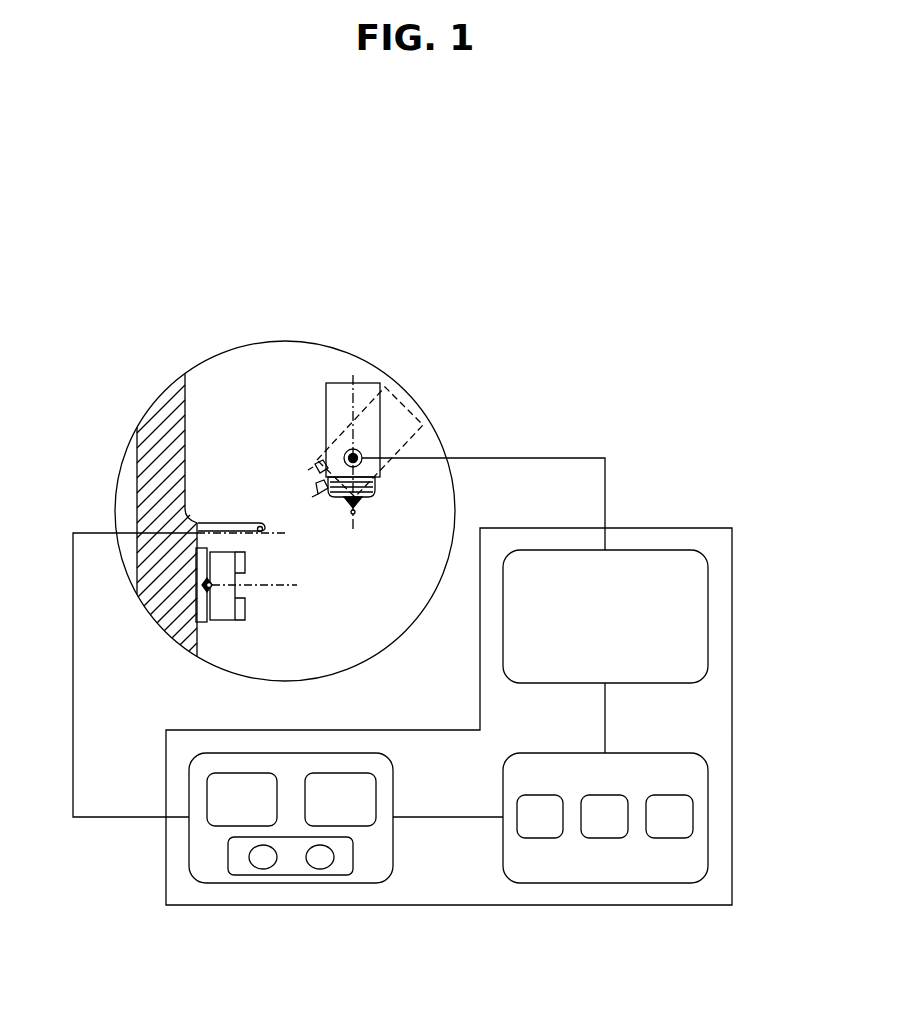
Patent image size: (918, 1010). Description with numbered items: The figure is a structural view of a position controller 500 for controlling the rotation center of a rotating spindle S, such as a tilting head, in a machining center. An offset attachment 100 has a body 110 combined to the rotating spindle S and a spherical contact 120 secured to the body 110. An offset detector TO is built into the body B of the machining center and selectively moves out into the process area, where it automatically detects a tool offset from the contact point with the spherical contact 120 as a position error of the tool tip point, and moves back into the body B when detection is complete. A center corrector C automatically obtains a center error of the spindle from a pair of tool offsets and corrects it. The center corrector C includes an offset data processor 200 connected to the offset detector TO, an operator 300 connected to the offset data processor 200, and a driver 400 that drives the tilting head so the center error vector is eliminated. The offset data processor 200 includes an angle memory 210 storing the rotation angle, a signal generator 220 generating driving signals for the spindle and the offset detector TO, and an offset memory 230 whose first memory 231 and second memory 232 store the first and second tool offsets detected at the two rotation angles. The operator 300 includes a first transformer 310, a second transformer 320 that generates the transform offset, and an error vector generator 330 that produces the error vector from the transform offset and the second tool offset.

The position controller 500 is at (383, 205).
The offset attachment 100 is at (260, 492).
The body 110 is at (317, 470).
The spherical contact 120 is at (313, 495).
The rotating spindle S is at (405, 420).
The body of the machining center B is at (148, 468).
The offset detector TO is at (197, 520).
The center corrector C is at (732, 695).
The driver 400 is at (708, 615).
The offset data processor 200 is at (273, 860).
The angle memory 210 is at (218, 794).
The signal generator 220 is at (365, 794).
The offset memory 230 is at (292, 902).
The first memory 231 is at (263, 860).
The second memory 232 is at (322, 860).
The operator 300 is at (654, 854).
The first transformer 310 is at (540, 830).
The second transformer 320 is at (605, 830).
The error vector generator 330 is at (670, 830).